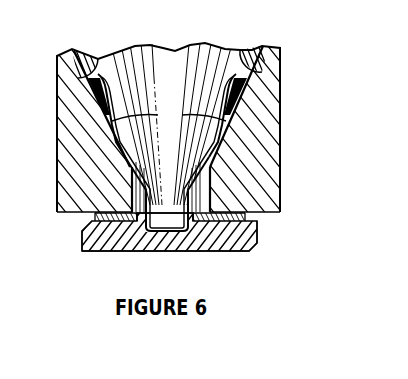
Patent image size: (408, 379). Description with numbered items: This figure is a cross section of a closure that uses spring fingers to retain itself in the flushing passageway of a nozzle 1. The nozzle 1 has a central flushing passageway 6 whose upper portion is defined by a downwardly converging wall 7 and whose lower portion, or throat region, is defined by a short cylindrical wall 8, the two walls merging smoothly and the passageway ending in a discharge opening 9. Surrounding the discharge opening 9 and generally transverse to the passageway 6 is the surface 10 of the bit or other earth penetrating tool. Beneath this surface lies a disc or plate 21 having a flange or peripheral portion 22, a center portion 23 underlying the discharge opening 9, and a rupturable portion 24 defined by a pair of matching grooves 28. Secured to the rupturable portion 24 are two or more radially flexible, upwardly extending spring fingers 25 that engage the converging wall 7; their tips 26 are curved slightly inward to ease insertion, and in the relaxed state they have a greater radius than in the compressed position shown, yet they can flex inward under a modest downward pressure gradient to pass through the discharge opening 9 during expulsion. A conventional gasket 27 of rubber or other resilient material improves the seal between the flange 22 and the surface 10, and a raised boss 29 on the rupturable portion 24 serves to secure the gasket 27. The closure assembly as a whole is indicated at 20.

The nozzle 1 is at (240, 50).
The flushing passageway 6 is at (177, 95).
The downwardly converging wall 7 is at (98, 58).
The short cylindrical wall 8 is at (130, 184).
The discharge opening 9 is at (168, 184).
The surface 10 is at (66, 219).
The base plate assembly 20 is at (167, 245).
The plate 21 is at (89, 249).
The flange 22 is at (234, 244).
The center portion 23 is at (207, 244).
The rupturable portion 24 is at (157, 244).
The spring fingers 25 is at (169, 117).
The tips 26 is at (228, 88).
The gasket 27 is at (240, 222).
The matching grooves 28 is at (124, 249).
The raised boss 29 is at (176, 182).